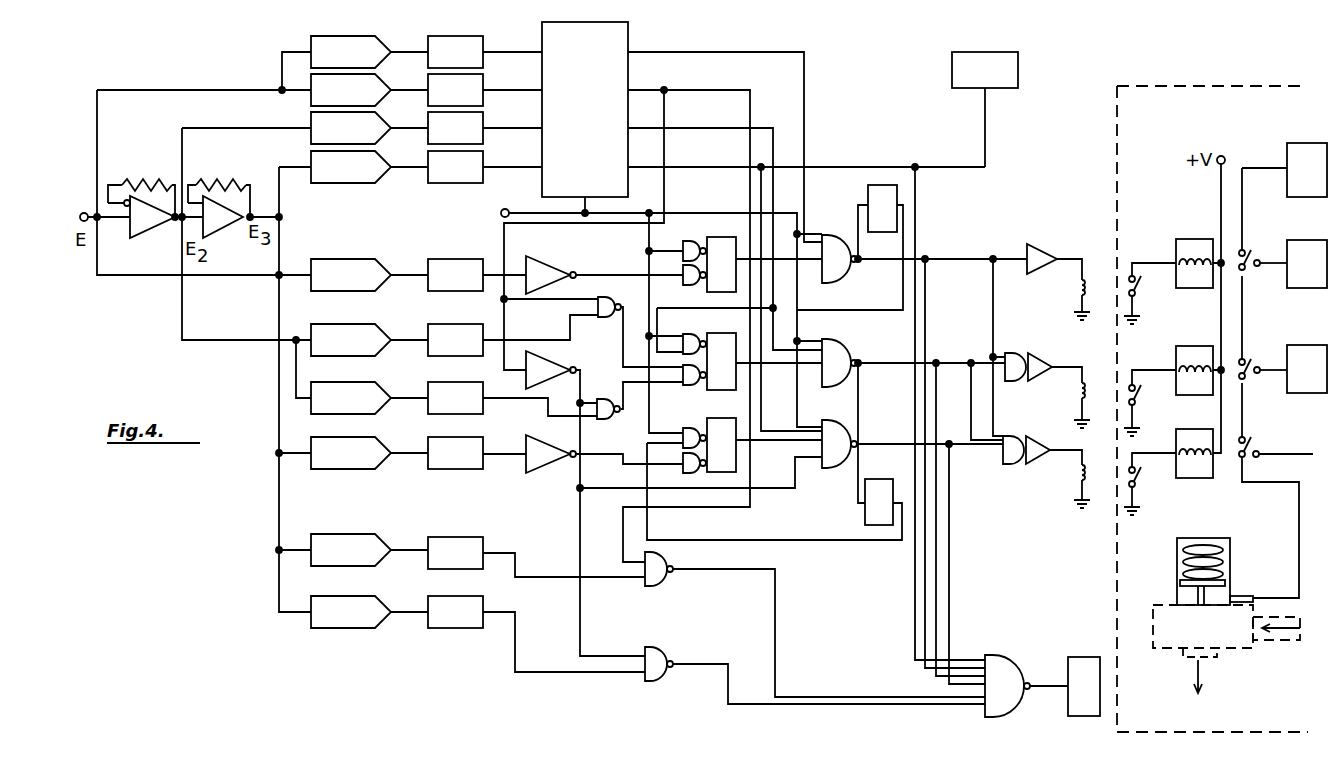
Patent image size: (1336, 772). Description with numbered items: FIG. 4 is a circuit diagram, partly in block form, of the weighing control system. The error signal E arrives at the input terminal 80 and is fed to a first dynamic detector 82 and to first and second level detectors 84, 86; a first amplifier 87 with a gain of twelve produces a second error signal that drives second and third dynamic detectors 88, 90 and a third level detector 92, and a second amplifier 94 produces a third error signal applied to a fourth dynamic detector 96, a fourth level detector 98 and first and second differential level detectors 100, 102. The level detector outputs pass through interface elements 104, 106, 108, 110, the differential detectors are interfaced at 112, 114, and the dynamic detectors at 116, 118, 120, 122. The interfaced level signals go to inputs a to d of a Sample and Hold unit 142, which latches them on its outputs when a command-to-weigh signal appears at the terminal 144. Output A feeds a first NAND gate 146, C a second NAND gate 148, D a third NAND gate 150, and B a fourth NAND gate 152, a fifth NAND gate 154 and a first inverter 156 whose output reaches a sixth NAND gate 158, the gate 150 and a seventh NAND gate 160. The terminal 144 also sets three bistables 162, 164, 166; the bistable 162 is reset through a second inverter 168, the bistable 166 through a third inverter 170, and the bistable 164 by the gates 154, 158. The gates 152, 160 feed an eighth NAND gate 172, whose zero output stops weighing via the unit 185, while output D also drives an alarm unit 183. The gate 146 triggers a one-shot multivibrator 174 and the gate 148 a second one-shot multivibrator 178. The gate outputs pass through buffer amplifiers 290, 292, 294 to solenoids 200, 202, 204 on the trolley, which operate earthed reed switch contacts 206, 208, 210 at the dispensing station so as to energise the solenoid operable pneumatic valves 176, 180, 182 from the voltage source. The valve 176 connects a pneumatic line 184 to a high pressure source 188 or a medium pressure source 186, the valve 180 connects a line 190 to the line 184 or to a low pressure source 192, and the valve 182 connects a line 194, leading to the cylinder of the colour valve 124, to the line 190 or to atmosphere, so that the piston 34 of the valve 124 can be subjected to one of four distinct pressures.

The piston 34 is at (1231, 584).
The input terminal 80 is at (82, 213).
The first dynamic detector 82 is at (351, 275).
The first level detector 84 is at (351, 52).
The second level detector 86 is at (351, 90).
The first amplifier 87 is at (155, 233).
The second dynamic detector 88 is at (351, 340).
The third dynamic detector 90 is at (351, 398).
The third level detector 92 is at (351, 128).
The second amplifier 94 is at (228, 222).
The fourth dynamic detector 96 is at (351, 453).
The fourth level detector 98 is at (351, 167).
The first differential level detector 100 is at (351, 550).
The second differential level detector 102 is at (351, 612).
The interface element 104 is at (455, 52).
The interface element 106 is at (455, 90).
The interface element 108 is at (455, 128).
The interface element 110 is at (455, 167).
The interface 112 is at (455, 553).
The interface 114 is at (455, 612).
The interface 116 is at (455, 275).
The interface 118 is at (455, 340).
The interface 120 is at (455, 398).
The interface 122 is at (455, 453).
The valve 124 is at (1234, 640).
The Sample and Hold unit 142 is at (604, 117).
The terminal 144 is at (505, 201).
The first NAND gate 146 is at (853, 265).
The second NAND gate 148 is at (838, 380).
The third NAND gate 150 is at (840, 434).
The fourth NAND gate 152 is at (658, 584).
The fifth NAND gate 154 is at (610, 294).
The first inverter 156 is at (566, 366).
The sixth NAND gate 158 is at (599, 398).
The seventh NAND gate 160 is at (661, 676).
The bistable 162 is at (716, 237).
The bistable 164 is at (710, 392).
The bistable 166 is at (716, 474).
The second inverter 168 is at (538, 259).
The third inverter 170 is at (570, 462).
The eighth NAND gate 172 is at (994, 656).
The one-shot multivibrator 174 is at (867, 191).
The first solenoid operable pneumatic valve 176 is at (1194, 239).
The second one-shot multivibrator 178 is at (865, 511).
The second solenoid operable pneumatic valve 180 is at (1194, 346).
The third solenoid operable pneumatic valve 182 is at (1208, 478).
The alarm unit 183 is at (985, 109).
The pneumatic line 184 is at (1243, 320).
The weighing termination unit 185 is at (1080, 657).
The source of medium pressure 186 is at (1307, 264).
The source of relatively high pressure 188 is at (1307, 170).
The pneumatic line 190 is at (1245, 417).
The source of low pressure 192 is at (1307, 369).
The pneumatic line 194 is at (1298, 516).
The solenoid 200 is at (1077, 288).
The solenoid 202 is at (1075, 392).
The solenoid 204 is at (1076, 490).
The reed switch contacts 206 is at (1142, 288).
The reed switch contacts 208 is at (1143, 398).
The reed switch contacts 210 is at (1142, 480).
The driver 290 is at (1065, 238).
The driver 292 is at (1050, 348).
The driver 294 is at (1042, 460).